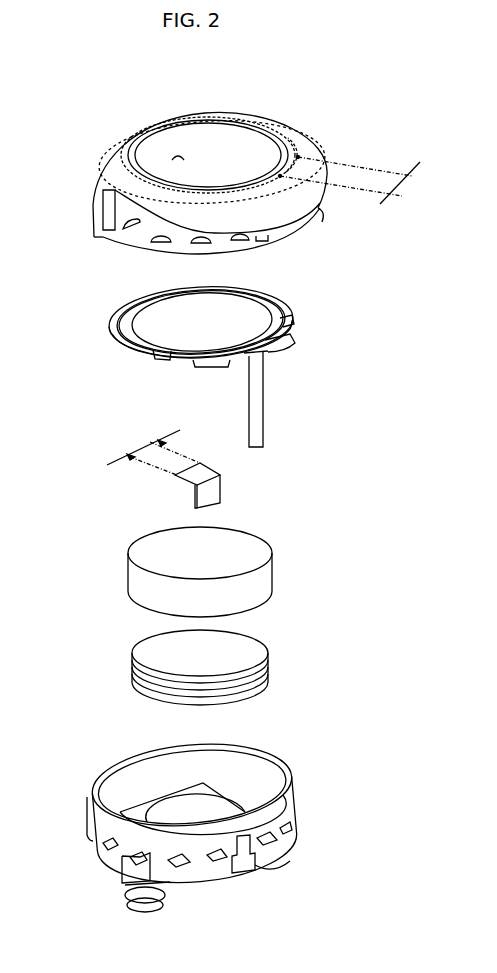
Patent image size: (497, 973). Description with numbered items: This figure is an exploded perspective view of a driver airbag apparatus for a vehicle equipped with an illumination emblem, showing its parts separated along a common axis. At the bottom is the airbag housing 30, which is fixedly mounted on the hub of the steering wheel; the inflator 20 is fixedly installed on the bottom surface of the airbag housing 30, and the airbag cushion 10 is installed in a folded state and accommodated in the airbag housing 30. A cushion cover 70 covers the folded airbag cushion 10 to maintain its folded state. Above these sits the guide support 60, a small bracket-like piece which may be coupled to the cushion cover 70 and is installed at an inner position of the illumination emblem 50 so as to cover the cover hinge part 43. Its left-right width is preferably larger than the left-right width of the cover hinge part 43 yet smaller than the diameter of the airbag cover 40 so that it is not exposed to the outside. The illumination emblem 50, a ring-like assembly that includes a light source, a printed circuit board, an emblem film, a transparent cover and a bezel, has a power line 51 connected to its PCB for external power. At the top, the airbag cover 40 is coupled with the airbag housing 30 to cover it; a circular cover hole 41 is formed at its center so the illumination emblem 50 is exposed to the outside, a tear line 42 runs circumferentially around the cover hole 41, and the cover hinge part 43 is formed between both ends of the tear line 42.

The airbag cushion 10 is at (268, 668).
The inflator 20 is at (217, 797).
The airbag housing 30 is at (282, 810).
The airbag cover 40 is at (98, 205).
The cover hole 41 is at (173, 136).
The tear line 42 is at (135, 126).
The cover hinge part 43 is at (292, 160).
The illumination emblem 50 is at (150, 316).
The power line 51 is at (263, 392).
The guide support 60 is at (215, 489).
The cushion cover 70 is at (272, 575).